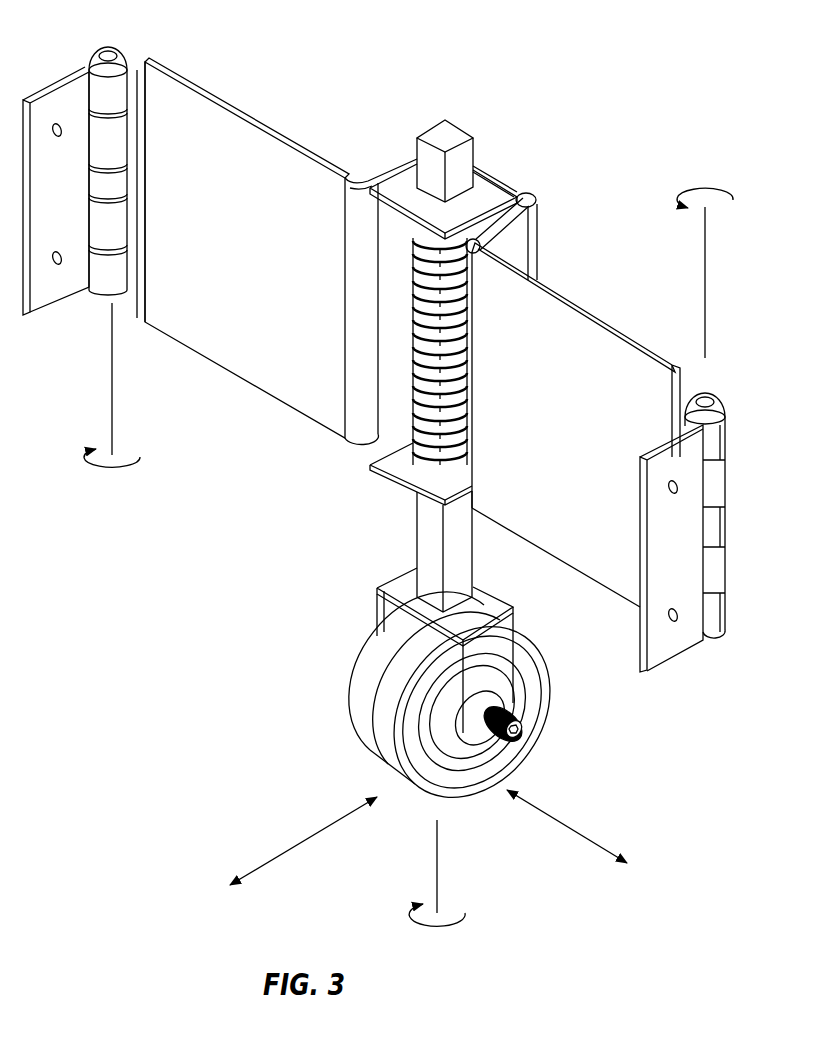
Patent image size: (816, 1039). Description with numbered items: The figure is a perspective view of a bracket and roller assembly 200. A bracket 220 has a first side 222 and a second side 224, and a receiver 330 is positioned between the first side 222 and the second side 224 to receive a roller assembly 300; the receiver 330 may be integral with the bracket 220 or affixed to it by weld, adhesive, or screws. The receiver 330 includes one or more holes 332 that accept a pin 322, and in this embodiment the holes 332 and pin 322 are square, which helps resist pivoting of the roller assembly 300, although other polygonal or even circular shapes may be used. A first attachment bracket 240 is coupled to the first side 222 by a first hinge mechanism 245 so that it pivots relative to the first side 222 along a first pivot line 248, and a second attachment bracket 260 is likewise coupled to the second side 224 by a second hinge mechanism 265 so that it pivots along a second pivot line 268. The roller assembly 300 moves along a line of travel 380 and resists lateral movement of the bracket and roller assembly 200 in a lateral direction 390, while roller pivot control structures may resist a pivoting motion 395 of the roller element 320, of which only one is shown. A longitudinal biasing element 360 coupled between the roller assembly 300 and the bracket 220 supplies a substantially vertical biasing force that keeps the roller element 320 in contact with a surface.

The bracket and roller assembly 200 is at (460, 38).
The bracket 220 is at (278, 114).
The first side 222 is at (176, 73).
The second side 224 is at (640, 593).
The first attachment bracket 240 is at (63, 299).
The first hinge mechanism 245 is at (116, 47).
The first pivot line 248 is at (113, 393).
The second attachment bracket 260 is at (666, 660).
The second hinge mechanism 265 is at (712, 394).
The second pivot line 268 is at (705, 265).
The roller assembly 300 is at (350, 491).
The roller element 320 is at (358, 664).
The pin 322 is at (457, 124).
The receiver 330 is at (370, 453).
The hole 332 is at (519, 204).
The longitudinal biasing element 360 is at (413, 297).
The line of travel 380 is at (298, 843).
The lateral direction 390 is at (572, 822).
The pivoting motion 395 is at (440, 886).